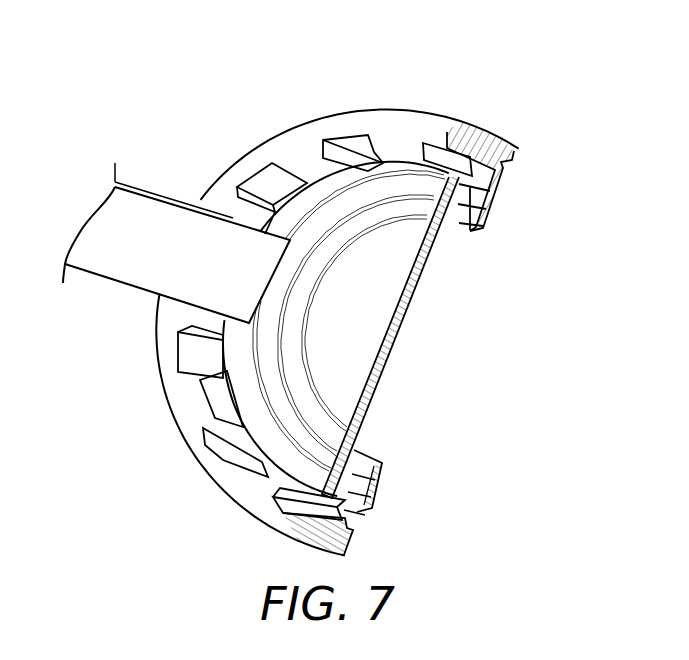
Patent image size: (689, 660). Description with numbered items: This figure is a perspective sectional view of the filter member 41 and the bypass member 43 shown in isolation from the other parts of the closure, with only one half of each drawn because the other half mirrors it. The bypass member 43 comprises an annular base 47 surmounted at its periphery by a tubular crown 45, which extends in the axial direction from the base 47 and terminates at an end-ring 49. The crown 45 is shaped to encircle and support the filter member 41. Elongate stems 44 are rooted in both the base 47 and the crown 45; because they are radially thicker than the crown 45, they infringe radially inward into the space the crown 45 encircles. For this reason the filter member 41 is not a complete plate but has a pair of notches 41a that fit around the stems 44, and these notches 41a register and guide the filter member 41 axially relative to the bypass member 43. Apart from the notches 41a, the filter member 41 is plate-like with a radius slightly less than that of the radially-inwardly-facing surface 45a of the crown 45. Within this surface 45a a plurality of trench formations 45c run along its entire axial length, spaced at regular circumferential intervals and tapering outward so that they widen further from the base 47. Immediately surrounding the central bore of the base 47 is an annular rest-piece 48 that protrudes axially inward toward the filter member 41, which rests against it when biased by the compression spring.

The filter member 41 is at (373, 340).
The notches 41a is at (273, 278).
The bypass member 43 is at (510, 201).
The elongate stems 44 is at (138, 200).
The tubular crown 45 is at (470, 147).
The radially-inwardly-facing surface 45a is at (310, 187).
The trench formations 45c is at (355, 142).
The annular base 47 is at (353, 497).
The annular rest-piece 48 is at (357, 462).
The end-ring 49 is at (167, 318).